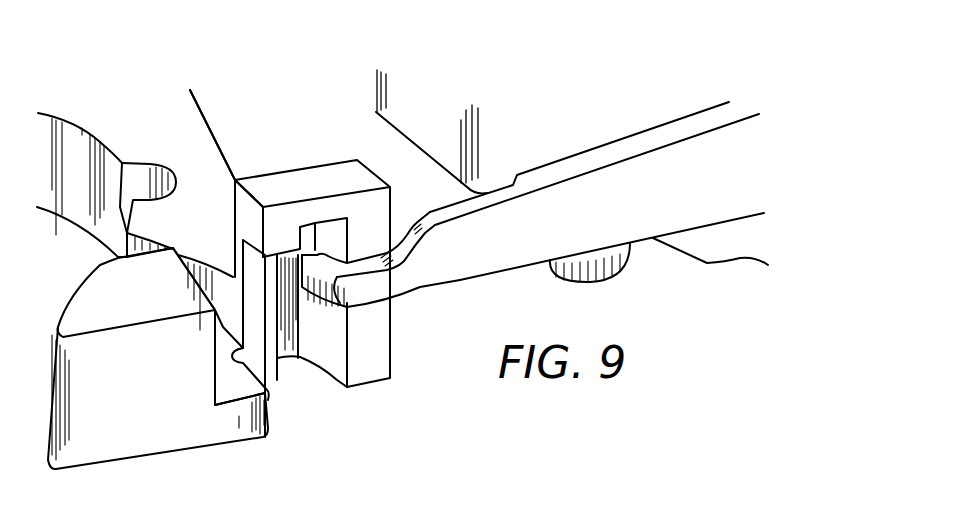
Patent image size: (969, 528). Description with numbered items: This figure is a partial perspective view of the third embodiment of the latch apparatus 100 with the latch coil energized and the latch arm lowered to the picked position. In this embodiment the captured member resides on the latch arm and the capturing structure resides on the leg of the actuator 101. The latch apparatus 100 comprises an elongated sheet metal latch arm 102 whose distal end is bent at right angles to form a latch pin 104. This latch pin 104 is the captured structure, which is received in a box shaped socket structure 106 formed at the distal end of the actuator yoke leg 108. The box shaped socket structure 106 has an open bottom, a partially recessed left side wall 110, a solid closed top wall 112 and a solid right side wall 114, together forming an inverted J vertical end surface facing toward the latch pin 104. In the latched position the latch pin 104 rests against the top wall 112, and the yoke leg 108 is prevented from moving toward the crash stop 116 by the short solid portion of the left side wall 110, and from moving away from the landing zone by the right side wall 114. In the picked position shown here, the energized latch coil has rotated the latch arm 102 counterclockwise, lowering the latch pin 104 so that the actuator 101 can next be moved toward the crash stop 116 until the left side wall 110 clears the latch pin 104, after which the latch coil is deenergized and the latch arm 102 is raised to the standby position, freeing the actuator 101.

The latch apparatus 100 is at (515, 100).
The actuator 101 is at (217, 137).
The latch arm 102 is at (634, 217).
The latch pin 104 is at (330, 310).
The box shaped socket structure 106 is at (390, 365).
The actuator yoke leg 108 is at (197, 107).
The left side wall 110 is at (248, 225).
The top wall 112 is at (322, 185).
The right side wall 114 is at (380, 312).
The crash stop 116 is at (412, 92).